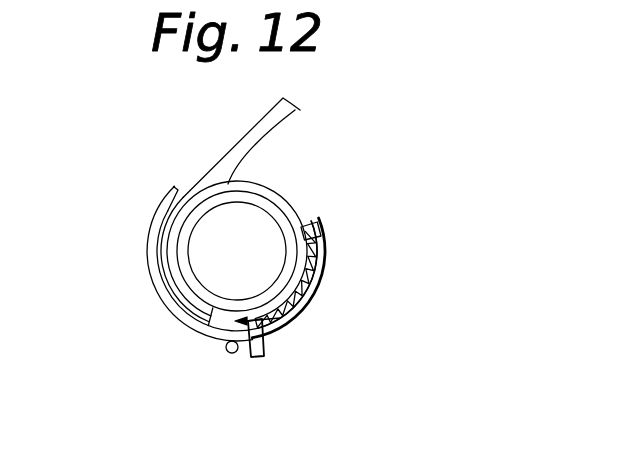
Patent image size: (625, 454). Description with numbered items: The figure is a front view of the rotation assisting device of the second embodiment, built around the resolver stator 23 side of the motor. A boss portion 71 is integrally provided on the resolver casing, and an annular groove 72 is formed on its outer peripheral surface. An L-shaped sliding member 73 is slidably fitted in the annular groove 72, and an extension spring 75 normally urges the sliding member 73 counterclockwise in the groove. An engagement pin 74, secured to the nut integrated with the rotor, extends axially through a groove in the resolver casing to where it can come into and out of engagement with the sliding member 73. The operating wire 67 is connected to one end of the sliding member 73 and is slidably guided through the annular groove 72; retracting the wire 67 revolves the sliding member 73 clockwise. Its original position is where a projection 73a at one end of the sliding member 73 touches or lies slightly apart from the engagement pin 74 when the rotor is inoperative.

The resolver stator 23 is at (158, 209).
The operating wire 67 is at (274, 131).
The boss portion 71 is at (220, 258).
The annular groove 72 is at (288, 207).
The sliding member 73 is at (300, 318).
The projection 73a is at (263, 352).
The engagement pin 74 is at (226, 349).
The extension spring 75 is at (318, 259).